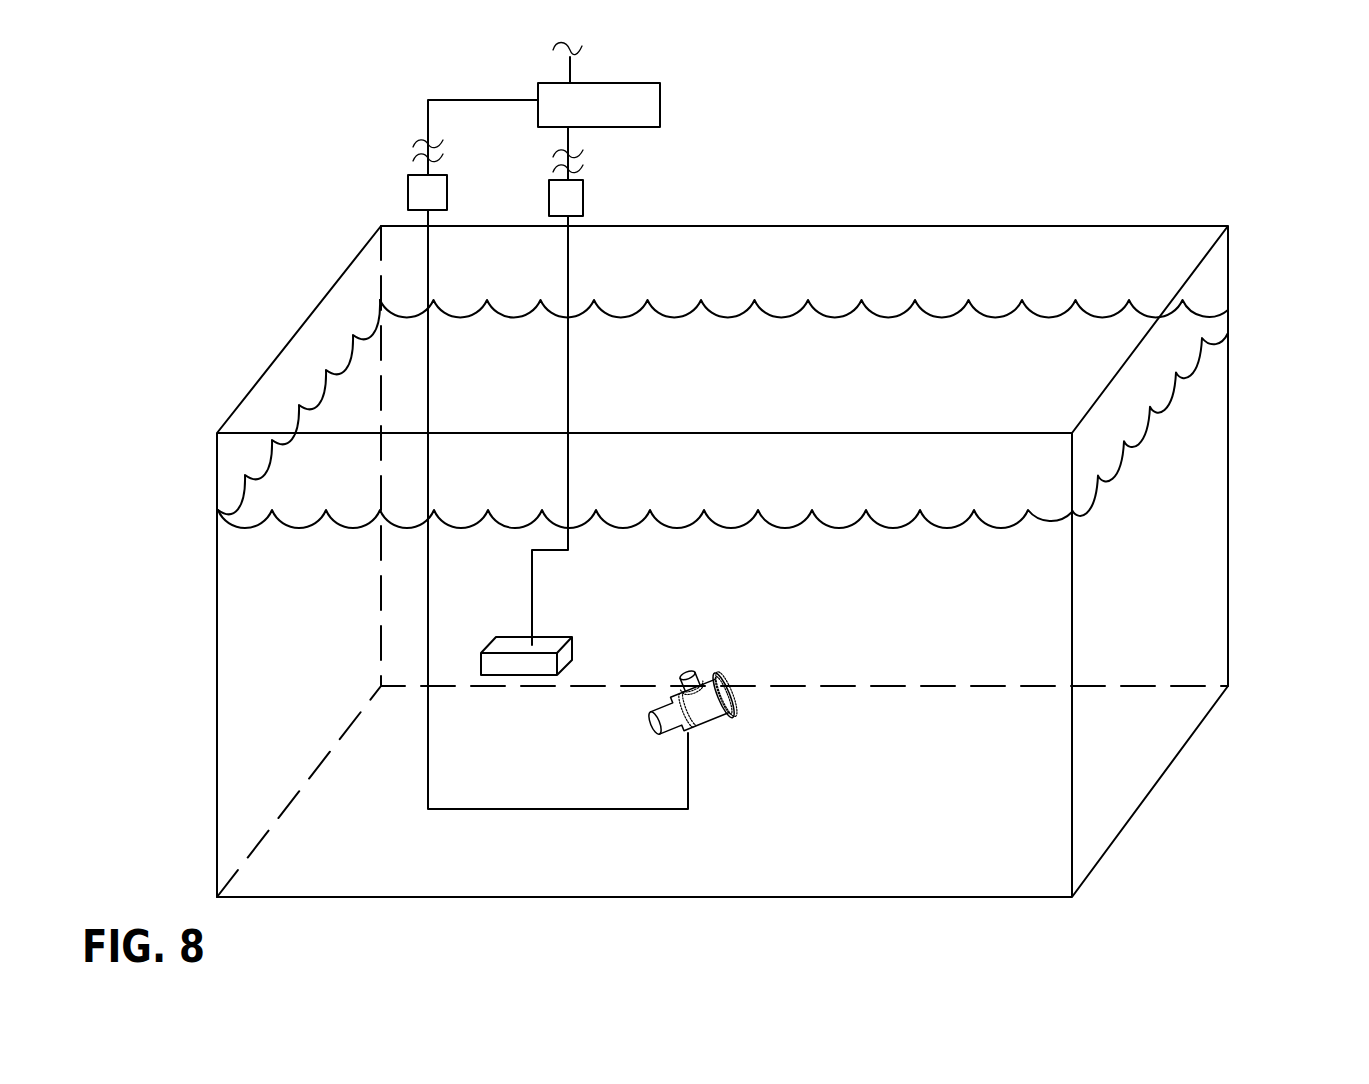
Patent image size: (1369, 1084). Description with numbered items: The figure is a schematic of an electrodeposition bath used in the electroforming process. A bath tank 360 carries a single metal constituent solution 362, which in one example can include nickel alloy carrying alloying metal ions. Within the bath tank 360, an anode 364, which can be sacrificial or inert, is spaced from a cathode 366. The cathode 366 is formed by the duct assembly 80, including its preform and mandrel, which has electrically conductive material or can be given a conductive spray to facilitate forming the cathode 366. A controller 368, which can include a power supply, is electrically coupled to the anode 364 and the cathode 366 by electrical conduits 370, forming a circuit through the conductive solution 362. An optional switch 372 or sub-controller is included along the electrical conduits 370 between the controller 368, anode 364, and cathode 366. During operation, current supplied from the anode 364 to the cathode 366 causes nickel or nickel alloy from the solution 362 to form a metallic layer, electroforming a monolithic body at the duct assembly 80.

The bath tank 360 is at (217, 622).
The single metal constituent solution 362 is at (1193, 377).
The anode 364 is at (556, 635).
The cathode 366 is at (748, 694).
The controller 368 is at (638, 83).
The electrical conduits 370 is at (428, 264).
The switch 372 is at (408, 190).
The duct assembly 80 is at (710, 710).